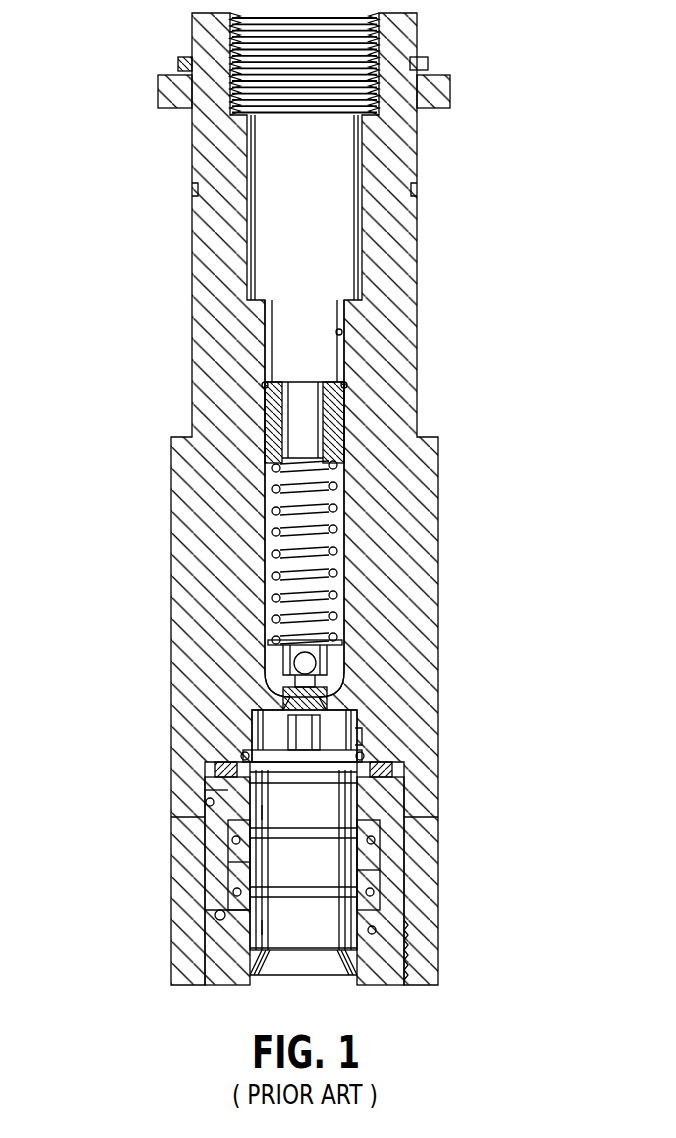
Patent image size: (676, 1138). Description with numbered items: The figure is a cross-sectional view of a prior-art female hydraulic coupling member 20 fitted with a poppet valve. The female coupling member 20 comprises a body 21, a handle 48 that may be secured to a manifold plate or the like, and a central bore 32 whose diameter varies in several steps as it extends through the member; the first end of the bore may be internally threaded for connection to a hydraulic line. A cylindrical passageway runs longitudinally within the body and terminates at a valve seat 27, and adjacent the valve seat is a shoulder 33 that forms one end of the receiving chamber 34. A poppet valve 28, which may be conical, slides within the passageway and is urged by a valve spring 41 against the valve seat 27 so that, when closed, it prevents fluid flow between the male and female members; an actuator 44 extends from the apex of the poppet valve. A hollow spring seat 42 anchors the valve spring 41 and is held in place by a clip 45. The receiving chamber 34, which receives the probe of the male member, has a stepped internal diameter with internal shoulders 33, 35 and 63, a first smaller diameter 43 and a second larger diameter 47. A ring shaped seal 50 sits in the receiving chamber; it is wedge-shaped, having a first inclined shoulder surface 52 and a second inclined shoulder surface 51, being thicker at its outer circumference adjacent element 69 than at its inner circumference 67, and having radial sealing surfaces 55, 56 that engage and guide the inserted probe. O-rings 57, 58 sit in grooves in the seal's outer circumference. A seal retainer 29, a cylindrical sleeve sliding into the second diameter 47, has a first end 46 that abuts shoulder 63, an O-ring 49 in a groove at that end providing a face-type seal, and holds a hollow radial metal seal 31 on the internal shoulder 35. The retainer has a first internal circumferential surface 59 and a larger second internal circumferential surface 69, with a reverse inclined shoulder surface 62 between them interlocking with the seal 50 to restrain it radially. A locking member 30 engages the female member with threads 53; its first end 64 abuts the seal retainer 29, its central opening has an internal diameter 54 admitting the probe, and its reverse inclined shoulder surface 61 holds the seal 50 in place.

The female coupling member 20 is at (153, 633).
The body 21 is at (190, 532).
The handle 48 is at (192, 150).
The central bore 32 is at (340, 335).
The clip 45 is at (344, 386).
The hollow spring seat 42 is at (268, 420).
The valve spring 41 is at (268, 490).
The valve seat 27 is at (330, 668).
The poppet valve 28 is at (295, 697).
The shoulder 33 is at (357, 712).
The actuator 44 is at (262, 718).
The first smaller diameter 43 is at (362, 742).
The internal shoulder 35 is at (248, 750).
The hollow radial metal seal 31 is at (247, 758).
The shoulder 63 is at (215, 770).
The first end of seal retainer 46 is at (394, 766).
The seal retainer 29 is at (415, 823).
The receiving chamber 34 is at (405, 800).
The O-ring 49 is at (400, 783).
The first internal circumferential surface 59 is at (205, 790).
The second larger diameter 47 is at (205, 805).
The first inclined shoulder surface 52 is at (230, 821).
The O-ring 58 is at (385, 845).
The ring shaped seal 50 is at (235, 846).
The radial sealing surface 56 is at (225, 863).
The inner circumference 67 is at (380, 871).
The radial sealing surface 55 is at (240, 886).
The O-ring 57 is at (400, 900).
The second internal circumferential surface 69 is at (230, 912).
The first end of locking member 64 is at (220, 926).
The internal diameter 54 is at (385, 936).
The second inclined shoulder surface 51 is at (240, 945).
The threads 53 is at (400, 965).
The locking member 30 is at (385, 985).
The reverse inclined shoulder surface 62 is at (262, 812).
The reverse inclined shoulder surface 61 is at (262, 928).